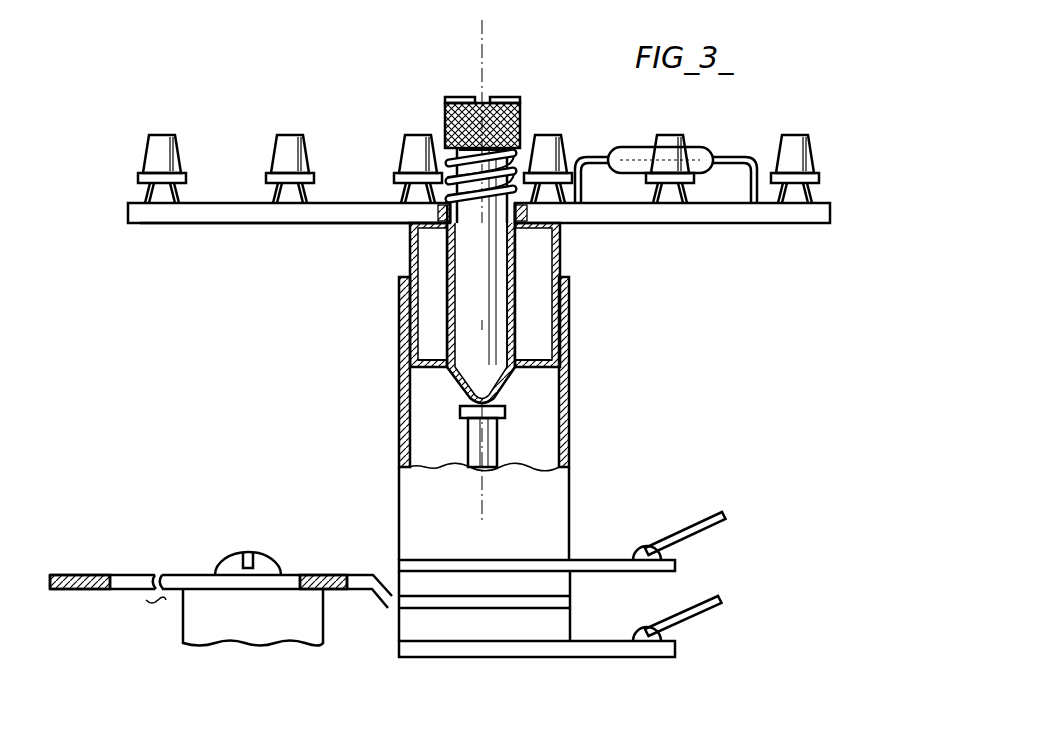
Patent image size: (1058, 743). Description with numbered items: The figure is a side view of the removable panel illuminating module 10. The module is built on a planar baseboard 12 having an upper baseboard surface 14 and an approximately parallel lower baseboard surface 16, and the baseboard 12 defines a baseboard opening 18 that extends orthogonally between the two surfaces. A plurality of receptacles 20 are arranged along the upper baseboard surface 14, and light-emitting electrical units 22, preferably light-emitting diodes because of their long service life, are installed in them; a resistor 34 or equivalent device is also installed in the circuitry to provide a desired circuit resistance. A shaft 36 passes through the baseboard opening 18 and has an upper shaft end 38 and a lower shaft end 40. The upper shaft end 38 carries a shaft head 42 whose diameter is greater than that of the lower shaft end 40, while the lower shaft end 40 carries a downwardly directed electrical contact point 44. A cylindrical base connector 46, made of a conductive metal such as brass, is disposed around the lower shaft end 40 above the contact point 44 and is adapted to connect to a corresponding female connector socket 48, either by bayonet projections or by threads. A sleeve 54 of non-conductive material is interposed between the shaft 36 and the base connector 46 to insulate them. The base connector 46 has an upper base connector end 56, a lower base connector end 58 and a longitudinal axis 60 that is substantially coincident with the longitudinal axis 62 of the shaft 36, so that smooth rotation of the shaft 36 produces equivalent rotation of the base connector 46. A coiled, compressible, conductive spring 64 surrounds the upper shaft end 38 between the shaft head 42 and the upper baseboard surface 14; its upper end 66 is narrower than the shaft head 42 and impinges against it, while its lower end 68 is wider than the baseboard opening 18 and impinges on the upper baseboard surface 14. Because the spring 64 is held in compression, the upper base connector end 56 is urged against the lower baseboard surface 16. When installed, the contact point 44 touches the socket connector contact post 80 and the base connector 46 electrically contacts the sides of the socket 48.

The panel illuminating module 10 is at (770, 118).
The planar baseboard 12 is at (178, 230).
The upper baseboard surface 14 is at (225, 204).
The lower baseboard surface 16 is at (230, 226).
The baseboard opening 18 is at (513, 238).
The receptacle 20 is at (142, 195).
The light-emitting electrical unit 22 is at (280, 134).
The resistor 34 is at (703, 148).
The shaft 36 is at (476, 322).
The upper shaft end 38 is at (440, 188).
The lower shaft end 40 is at (495, 365).
The shaft head 42 is at (447, 112).
The electrical contact point 44 is at (495, 404).
The cylindrical base connector 46 is at (403, 263).
The female connector socket 48 is at (570, 500).
The sleeve 54 is at (517, 319).
The upper base connector end 56 is at (411, 233).
The lower base connector end 58 is at (400, 357).
The longitudinal axis of base connector 60 is at (482, 503).
The longitudinal axis of shaft 62 is at (483, 68).
The spring 64 is at (528, 168).
The upper end of spring 66 is at (518, 135).
The lower end of spring 68 is at (442, 200).
The socket connector contact post 80 is at (497, 436).